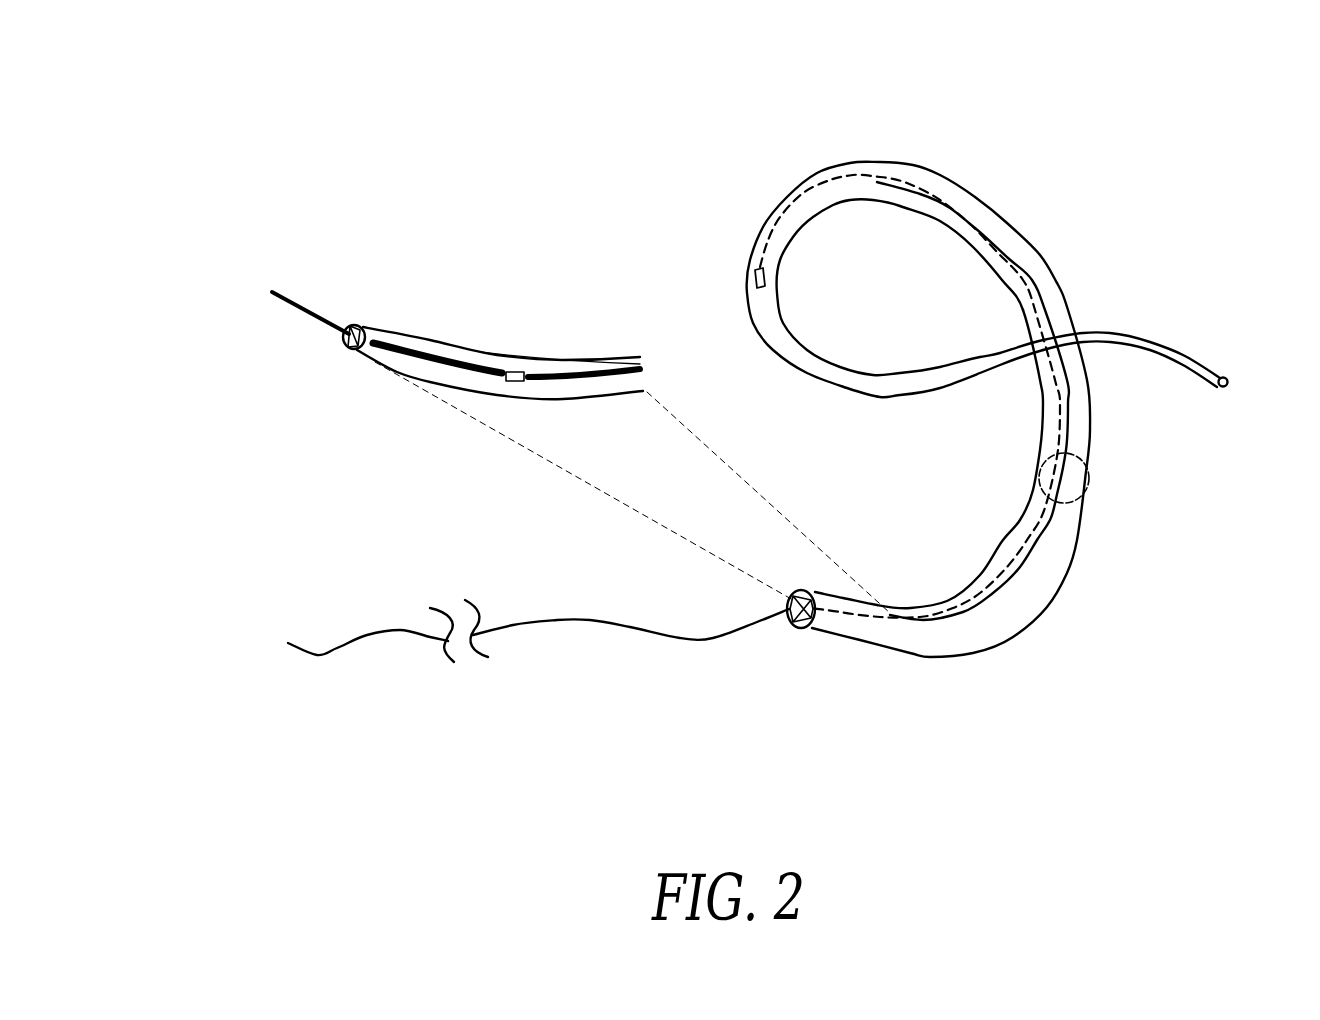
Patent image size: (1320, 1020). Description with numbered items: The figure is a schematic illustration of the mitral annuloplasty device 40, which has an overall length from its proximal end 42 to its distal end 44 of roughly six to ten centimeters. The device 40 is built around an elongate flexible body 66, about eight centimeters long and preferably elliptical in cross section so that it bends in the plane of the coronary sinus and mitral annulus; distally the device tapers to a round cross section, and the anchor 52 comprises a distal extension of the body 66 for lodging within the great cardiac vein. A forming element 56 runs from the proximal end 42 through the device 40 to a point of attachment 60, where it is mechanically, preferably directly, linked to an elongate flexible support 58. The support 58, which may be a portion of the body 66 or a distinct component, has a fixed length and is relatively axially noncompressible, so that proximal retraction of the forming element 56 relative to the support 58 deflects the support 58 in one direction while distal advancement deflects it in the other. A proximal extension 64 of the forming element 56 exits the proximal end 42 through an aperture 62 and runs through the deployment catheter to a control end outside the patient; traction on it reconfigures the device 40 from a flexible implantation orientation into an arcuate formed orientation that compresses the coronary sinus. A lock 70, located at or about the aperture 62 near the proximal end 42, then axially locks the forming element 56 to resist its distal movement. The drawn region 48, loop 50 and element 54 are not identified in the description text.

The device 40 is at (707, 282).
The proximal end 42 is at (574, 461).
The distal end 44 is at (1229, 374).
The bend region 48 is at (1090, 463).
The loop 50 is at (873, 233).
The anchor 52 is at (897, 358).
The guide wire 54 is at (997, 583).
The forming element 56 is at (587, 622).
The elongate flexible support 58 is at (981, 435).
The point of attachment 60 is at (757, 270).
The aperture 62 is at (810, 627).
The proximal extension 64 is at (337, 648).
The elongate flexible body 66 is at (1053, 567).
The lock 70 is at (816, 591).